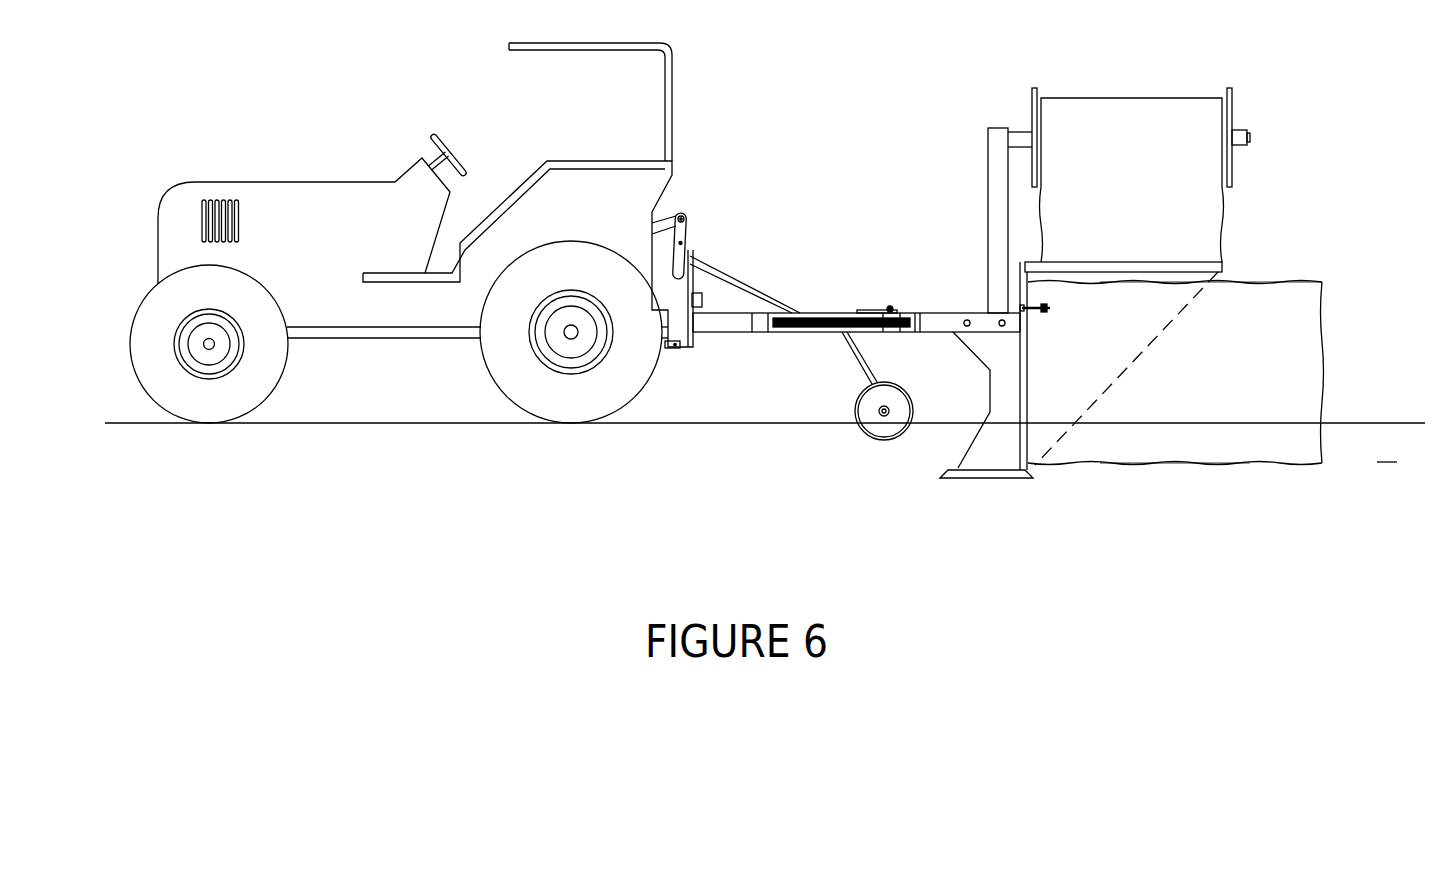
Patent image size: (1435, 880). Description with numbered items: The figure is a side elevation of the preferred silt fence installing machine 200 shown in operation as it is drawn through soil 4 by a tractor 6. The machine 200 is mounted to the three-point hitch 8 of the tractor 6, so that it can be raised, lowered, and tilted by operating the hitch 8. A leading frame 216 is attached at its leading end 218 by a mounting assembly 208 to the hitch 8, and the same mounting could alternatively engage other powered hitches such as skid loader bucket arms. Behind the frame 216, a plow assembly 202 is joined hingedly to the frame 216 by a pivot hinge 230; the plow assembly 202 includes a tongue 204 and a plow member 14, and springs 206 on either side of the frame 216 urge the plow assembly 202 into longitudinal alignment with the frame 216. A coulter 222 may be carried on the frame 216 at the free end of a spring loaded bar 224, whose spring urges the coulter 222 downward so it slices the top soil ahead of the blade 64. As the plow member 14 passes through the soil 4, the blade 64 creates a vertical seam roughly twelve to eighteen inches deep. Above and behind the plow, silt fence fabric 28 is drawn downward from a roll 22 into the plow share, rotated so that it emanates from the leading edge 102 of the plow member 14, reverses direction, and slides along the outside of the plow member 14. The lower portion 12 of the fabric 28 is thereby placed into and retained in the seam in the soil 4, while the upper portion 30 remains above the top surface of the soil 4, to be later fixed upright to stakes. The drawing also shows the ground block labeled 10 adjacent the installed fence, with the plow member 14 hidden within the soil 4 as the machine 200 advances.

The tractor 6 is at (401, 233).
The three-point hitch 8 is at (699, 235).
The mounting assembly 208 is at (728, 217).
The leading end 218 is at (726, 369).
The leading frame 216 is at (759, 271).
The tongue 204 is at (856, 412).
The springs 206 is at (859, 260).
The pivot hinge 230 is at (915, 280).
The spring loaded bar 224 is at (806, 379).
The coulter 222 is at (828, 433).
The blade 64 is at (1013, 404).
The plow assembly 202 is at (942, 514).
The leading edge 102 is at (1095, 413).
The silt fence installing machine 200 is at (1183, 182).
The roll 22 is at (1141, 110).
The silt fence fabric 28 is at (1178, 217).
The ground block 10 is at (1219, 373).
The upper portion 30 is at (1246, 269).
The lower portion 12 is at (1187, 497).
The plow member 14 is at (1182, 334).
The soil 4 is at (1387, 447).